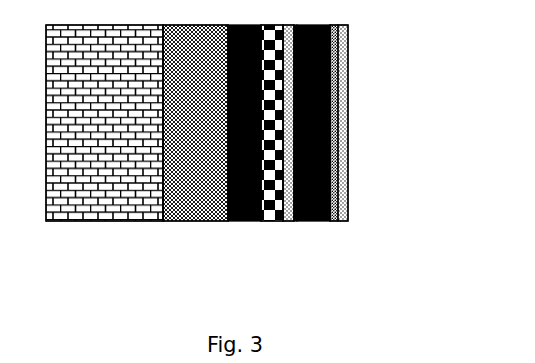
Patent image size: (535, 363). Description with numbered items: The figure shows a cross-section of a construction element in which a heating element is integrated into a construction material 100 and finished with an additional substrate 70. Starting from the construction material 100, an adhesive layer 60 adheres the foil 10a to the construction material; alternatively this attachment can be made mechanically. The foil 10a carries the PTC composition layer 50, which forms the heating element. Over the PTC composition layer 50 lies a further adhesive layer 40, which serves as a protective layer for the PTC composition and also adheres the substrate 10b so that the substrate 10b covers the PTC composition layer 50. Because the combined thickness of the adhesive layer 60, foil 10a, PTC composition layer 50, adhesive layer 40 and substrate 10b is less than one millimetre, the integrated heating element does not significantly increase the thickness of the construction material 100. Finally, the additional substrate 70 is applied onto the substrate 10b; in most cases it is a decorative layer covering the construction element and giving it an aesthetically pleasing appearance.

The construction material 100 is at (127, 200).
The adhesive layer 60 is at (197, 210).
The foil 10a is at (244, 221).
The PTC composition layer 50 is at (280, 218).
The adhesive layer 40 is at (293, 218).
The substrate 10b is at (328, 220).
The additional substrate 70 is at (347, 216).